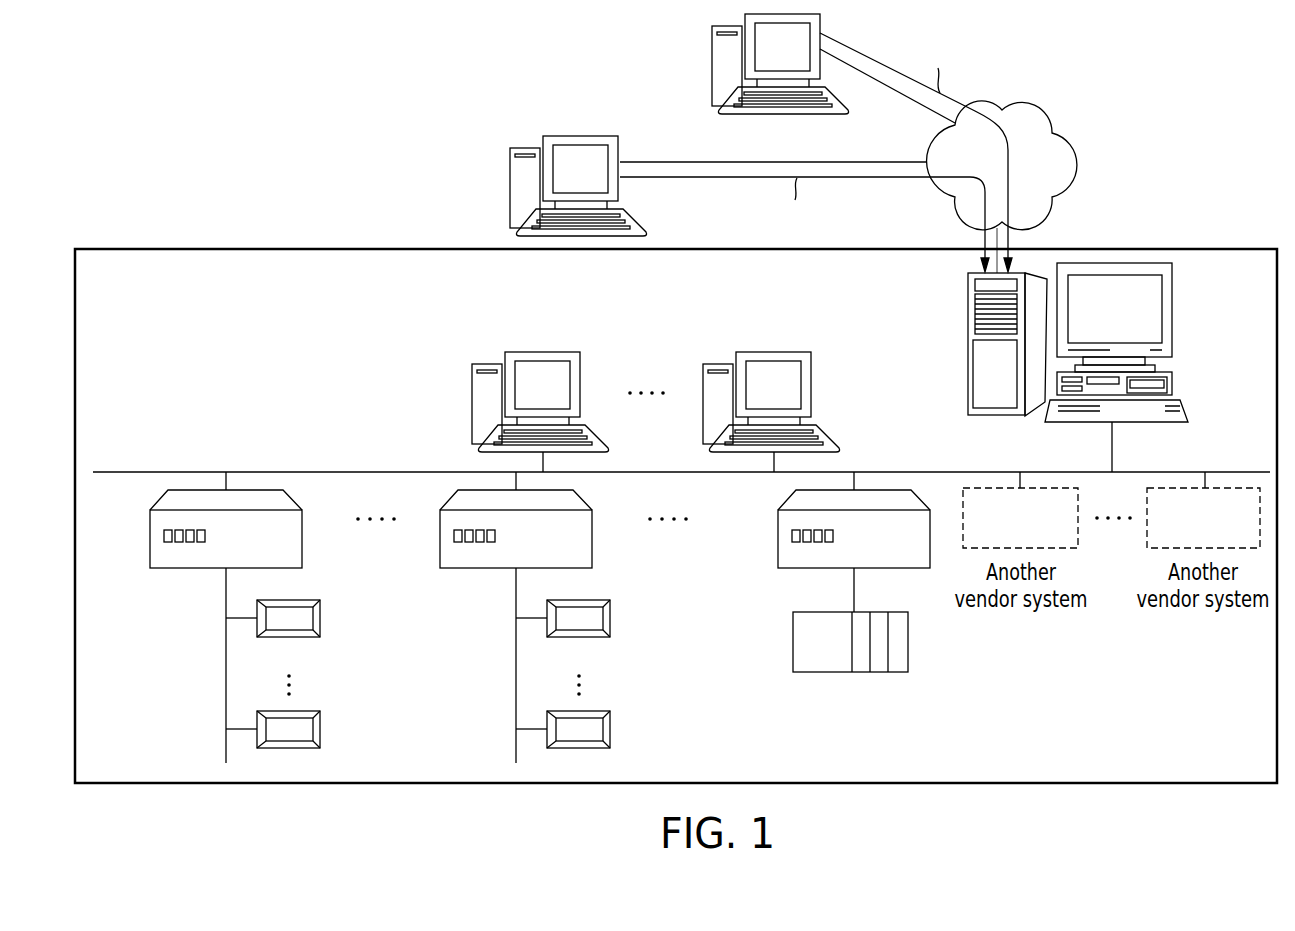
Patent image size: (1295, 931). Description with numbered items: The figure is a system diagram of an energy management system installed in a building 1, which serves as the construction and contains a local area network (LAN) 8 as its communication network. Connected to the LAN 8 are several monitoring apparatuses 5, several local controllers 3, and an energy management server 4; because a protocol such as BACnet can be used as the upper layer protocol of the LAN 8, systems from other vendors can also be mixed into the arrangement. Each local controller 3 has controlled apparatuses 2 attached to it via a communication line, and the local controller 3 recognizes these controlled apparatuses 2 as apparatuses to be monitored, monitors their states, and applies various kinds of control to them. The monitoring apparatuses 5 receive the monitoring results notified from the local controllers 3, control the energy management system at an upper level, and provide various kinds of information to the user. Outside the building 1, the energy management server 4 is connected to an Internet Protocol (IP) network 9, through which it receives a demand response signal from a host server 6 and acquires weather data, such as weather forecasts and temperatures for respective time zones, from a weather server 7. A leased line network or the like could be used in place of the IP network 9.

The building 1 is at (224, 248).
The controlled apparatuses 2 is at (321, 618).
The local controllers 3 is at (170, 568).
The energy management server 4 is at (1172, 288).
The monitoring apparatuses 5 is at (545, 352).
The host server 6 is at (510, 172).
The weather server 7 is at (712, 43).
The local area network (LAN) 8 is at (1228, 470).
The Internet Protocol (IP) network 9 is at (1080, 170).